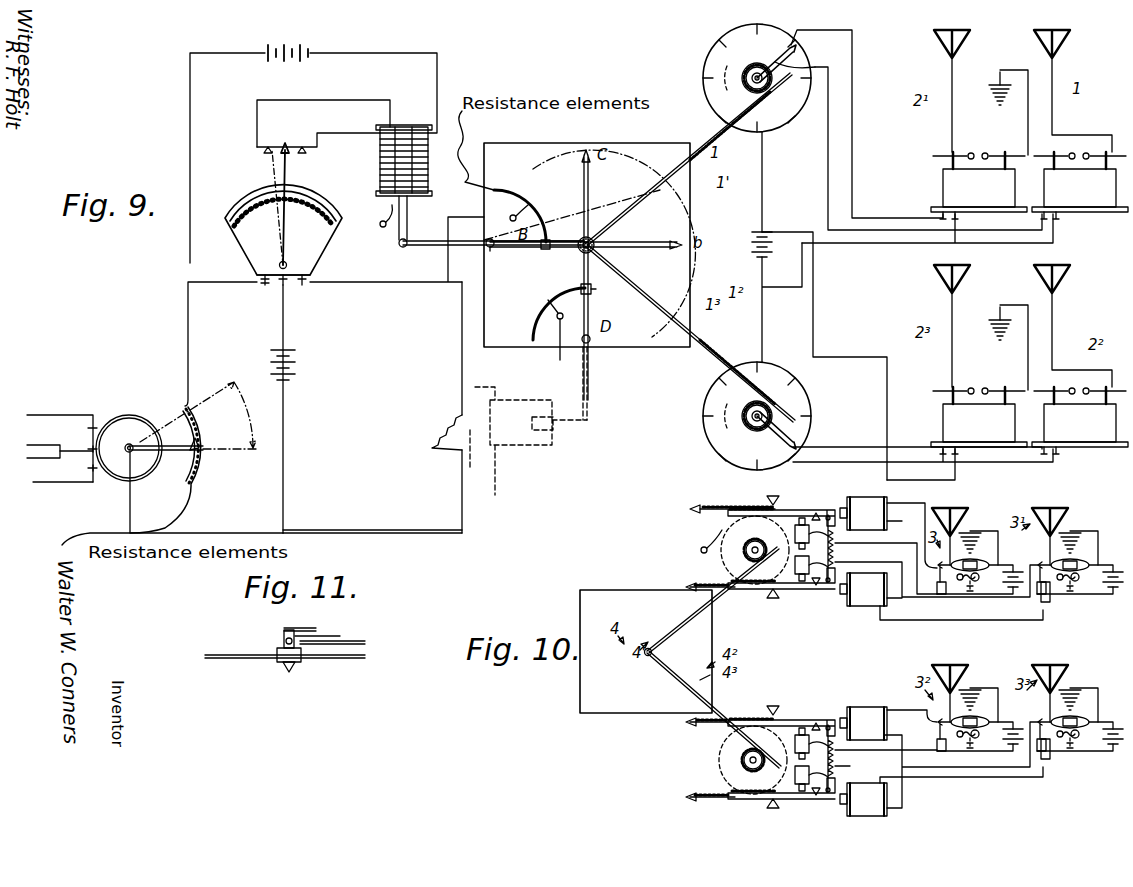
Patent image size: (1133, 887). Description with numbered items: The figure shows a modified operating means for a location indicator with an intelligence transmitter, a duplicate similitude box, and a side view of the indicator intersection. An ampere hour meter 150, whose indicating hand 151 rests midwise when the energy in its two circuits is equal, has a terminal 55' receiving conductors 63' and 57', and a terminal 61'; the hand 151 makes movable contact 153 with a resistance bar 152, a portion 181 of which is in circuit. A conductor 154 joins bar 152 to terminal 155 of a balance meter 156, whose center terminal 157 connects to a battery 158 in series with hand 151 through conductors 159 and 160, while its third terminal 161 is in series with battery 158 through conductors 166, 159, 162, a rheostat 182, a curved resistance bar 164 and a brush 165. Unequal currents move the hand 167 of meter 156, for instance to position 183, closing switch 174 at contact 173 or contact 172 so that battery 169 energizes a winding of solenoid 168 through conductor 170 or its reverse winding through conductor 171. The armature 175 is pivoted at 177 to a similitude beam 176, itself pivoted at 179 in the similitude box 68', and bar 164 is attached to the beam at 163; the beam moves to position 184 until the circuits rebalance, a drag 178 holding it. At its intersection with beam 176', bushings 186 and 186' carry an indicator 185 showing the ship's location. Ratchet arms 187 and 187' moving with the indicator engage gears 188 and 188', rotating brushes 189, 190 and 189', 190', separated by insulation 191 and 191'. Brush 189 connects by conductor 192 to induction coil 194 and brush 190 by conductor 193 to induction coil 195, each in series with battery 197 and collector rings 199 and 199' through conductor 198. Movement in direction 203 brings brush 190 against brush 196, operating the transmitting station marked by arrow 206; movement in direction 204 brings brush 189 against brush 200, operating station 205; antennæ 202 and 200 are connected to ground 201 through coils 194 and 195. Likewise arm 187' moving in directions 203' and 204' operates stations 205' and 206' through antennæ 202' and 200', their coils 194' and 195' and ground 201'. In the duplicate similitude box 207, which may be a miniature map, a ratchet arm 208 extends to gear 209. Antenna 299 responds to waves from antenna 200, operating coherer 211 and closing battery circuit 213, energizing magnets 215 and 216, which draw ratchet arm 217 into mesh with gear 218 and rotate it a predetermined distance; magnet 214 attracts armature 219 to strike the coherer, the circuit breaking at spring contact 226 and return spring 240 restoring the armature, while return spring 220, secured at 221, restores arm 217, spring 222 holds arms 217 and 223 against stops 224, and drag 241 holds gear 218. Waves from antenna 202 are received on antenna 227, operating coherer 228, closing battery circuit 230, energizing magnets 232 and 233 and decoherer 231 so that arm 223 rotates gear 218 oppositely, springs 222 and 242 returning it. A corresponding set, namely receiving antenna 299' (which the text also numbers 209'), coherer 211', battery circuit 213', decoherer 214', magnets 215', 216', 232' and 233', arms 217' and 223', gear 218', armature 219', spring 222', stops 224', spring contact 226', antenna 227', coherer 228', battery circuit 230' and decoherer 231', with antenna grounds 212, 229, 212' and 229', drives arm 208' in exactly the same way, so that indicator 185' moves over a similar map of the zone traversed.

In FIG. 9, the ampere hour meter 150 is at (140, 470).
In FIG. 9, the indicating hand 151 is at (148, 440).
In FIG. 9, the resistance bar 152 is at (197, 478).
In FIG. 9, the movable electrical contact 153 is at (198, 440).
In FIG. 9, the conductor 154 is at (188, 333).
In FIG. 9, the terminal 155 is at (262, 285).
In FIG. 9, the balance meter 156 is at (305, 250).
In FIG. 9, the center terminal 157 is at (284, 285).
In FIG. 9, the battery 158 is at (298, 363).
In FIG. 9, the conductor 159 is at (285, 497).
In FIG. 9, the conductor 160 is at (260, 530).
In FIG. 9, the third terminal 161 is at (305, 282).
In FIG. 9, the conductor 162 is at (462, 498).
In FIG. 9, the attachment point 163 is at (586, 275).
In FIG. 9, the curved resistance bar 164 is at (540, 236).
In FIG. 9, the brush 165 is at (512, 212).
In FIG. 9, the conductor 166 is at (420, 283).
In FIG. 9, the hand 167 is at (282, 240).
In FIG. 9, the solenoid 168 is at (429, 160).
In FIG. 9, the battery 169 is at (313, 141).
In FIG. 9, the conductor 170 is at (325, 100).
In FIG. 9, the conductor 171 is at (352, 124).
In FIG. 9, the contact 172 is at (303, 145).
In FIG. 9, the contact 173 is at (268, 145).
In FIG. 9, the switch 174 is at (290, 158).
In FIG. 9, the armature 175 is at (409, 225).
In FIG. 9, the similitude beam 176 is at (493, 230).
In FIG. 11, the similitude beam 176 is at (277, 638).
In FIG. 9, the beam 176' is at (563, 300).
In FIG. 11, the beam 176' is at (252, 623).
In FIG. 9, the pivot 177 is at (400, 248).
In FIG. 9, the drag 178 is at (374, 211).
In FIG. 9, the pivot 179 is at (501, 254).
In FIG. 9, the portion of resistance bar 181 is at (238, 385).
In FIG. 9, the rheostat 182 is at (448, 432).
In FIG. 9, the position 183 is at (270, 162).
In FIG. 9, the position 184 is at (589, 243).
In FIG. 11, the indicator 185 is at (305, 670).
In FIG. 10, the indicator 185' is at (622, 665).
In FIG. 11, the bushing 186 is at (254, 661).
In FIG. 11, the bushing 186' is at (323, 619).
In FIG. 9, the ratchet arm 187 is at (688, 159).
In FIG. 11, the ratchet arm 187 is at (299, 616).
In FIG. 9, the ratchet arm 187' is at (690, 333).
In FIG. 11, the ratchet arm 187' is at (345, 643).
In FIG. 9, the gear 188 is at (741, 75).
In FIG. 9, the gear 188' is at (733, 416).
In FIG. 9, the brush 189 is at (737, 53).
In FIG. 9, the brush 189' is at (724, 436).
In FIG. 9, the brush 190 is at (928, 148).
In FIG. 9, the brush 190' is at (923, 434).
In FIG. 9, the insulation 191 is at (797, 56).
In FIG. 9, the insulation 191' is at (815, 430).
In FIG. 9, the conductor 192 is at (830, 108).
In FIG. 9, the conductor 193 is at (828, 193).
In FIG. 9, the induction coil 194 is at (962, 185).
In FIG. 9, the receiver 194' is at (979, 420).
In FIG. 9, the induction coil 195 is at (1080, 185).
In FIG. 9, the receiver 195' is at (1080, 420).
In FIG. 9, the brush 196 is at (810, 57).
In FIG. 9, the battery 197 is at (752, 236).
In FIG. 9, the conductor 198 is at (870, 244).
In FIG. 9, the collector ring 199 is at (783, 182).
In FIG. 9, the collector ring 199' is at (860, 409).
In FIG. 9, the antenna 200 is at (949, 115).
In FIG. 9, the antenna 200' is at (1073, 326).
In FIG. 9, the ground 201 is at (1000, 101).
In FIG. 9, the ground 201' is at (1001, 336).
In FIG. 9, the antenna 202 is at (932, 91).
In FIG. 9, the antenna 202' is at (925, 326).
In FIG. 9, the arrow 203 is at (723, 139).
In FIG. 10, the arrow 203 is at (641, 615).
In FIG. 9, the arrow 203' is at (721, 305).
In FIG. 10, the arrow 203' is at (684, 674).
In FIG. 9, the arrow 204 is at (737, 159).
In FIG. 10, the arrow 204 is at (658, 613).
In FIG. 9, the arrow 204' is at (719, 284).
In FIG. 10, the arrow 204' is at (688, 659).
In FIG. 9, the transmitting station 205 is at (912, 119).
In FIG. 9, the transmitting station 205' is at (919, 356).
In FIG. 9, the transmitting station 206 is at (1096, 75).
In FIG. 9, the transmitting station 206' is at (1078, 334).
In FIG. 10, the duplicate similitude box 207 is at (595, 598).
In FIG. 10, the ratchet arm 208 is at (703, 600).
In FIG. 10, the ratchet arm 208' is at (697, 709).
In FIG. 10, the gear 209 is at (732, 550).
In FIG. 10, the antenna 209' is at (723, 760).
In FIG. 10, the coherer 211 is at (977, 551).
In FIG. 10, the detector 211' is at (977, 708).
In FIG. 10, the ground 212 is at (989, 516).
In FIG. 10, the ground 212' is at (992, 674).
In FIG. 10, the battery circuit 213 is at (1019, 552).
In FIG. 10, the battery 213' is at (1026, 713).
In FIG. 10, the magnet 214 is at (961, 612).
In FIG. 10, the conductor 214' is at (961, 772).
In FIG. 10, the magnet 215 is at (770, 606).
In FIG. 10, the conductor 215' is at (901, 735).
In FIG. 10, the magnet 216 is at (864, 505).
In FIG. 10, the relay magnet 216' is at (868, 713).
In FIG. 10, the ratchet arm 217 is at (783, 500).
In FIG. 10, the rack frame 217' is at (760, 706).
In FIG. 10, the gear 218 is at (690, 565).
In FIG. 10, the wheel 218' is at (691, 768).
In FIG. 10, the armature 219 is at (986, 583).
In FIG. 10, the relay 219' is at (985, 741).
In FIG. 10, the return spring 220 is at (715, 507).
In FIG. 10, the securing point 221 is at (688, 506).
In FIG. 10, the spring 222 is at (852, 548).
In FIG. 10, the spring rod 222' is at (851, 730).
In FIG. 10, the ratchet arm 223 is at (760, 595).
In FIG. 10, the rack 223' is at (749, 787).
In FIG. 10, the stops 224 is at (771, 549).
In FIG. 10, the arrow 224' is at (790, 747).
In FIG. 10, the spring contact 226 is at (912, 535).
In FIG. 10, the conductor 226' is at (912, 724).
In FIG. 10, the antenna 227 is at (1057, 498).
In FIG. 10, the antenna 227' is at (1046, 654).
In FIG. 10, the coherer 228 is at (1077, 551).
In FIG. 10, the detector 228' is at (1077, 708).
In FIG. 10, the ground 229 is at (1084, 519).
In FIG. 10, the ground 229' is at (1090, 674).
In FIG. 10, the battery circuit 230 is at (1092, 604).
In FIG. 10, the battery 230' is at (1093, 765).
In FIG. 10, the decoherer 231 is at (1054, 606).
In FIG. 10, the relay 231' is at (1056, 767).
In FIG. 10, the magnet 232 is at (810, 580).
In FIG. 10, the magnet coil 232' is at (810, 728).
In FIG. 10, the magnet 233 is at (863, 608).
In FIG. 10, the relay magnet 233' is at (863, 784).
In FIG. 10, the return spring 240 is at (968, 580).
In FIG. 10, the drag 241 is at (701, 549).
In FIG. 10, the return spring 242 is at (700, 583).
In FIG. 10, the antenna 299 is at (954, 496).
In FIG. 10, the antenna 299' is at (946, 654).
In FIG. 9, the similitude box 68' is at (587, 233).
In FIG. 9, the terminal 61' is at (66, 430).
In FIG. 9, the terminal 63' is at (40, 435).
In FIG. 9, the terminal 55' is at (73, 458).
In FIG. 9, the conductor 57' is at (65, 484).